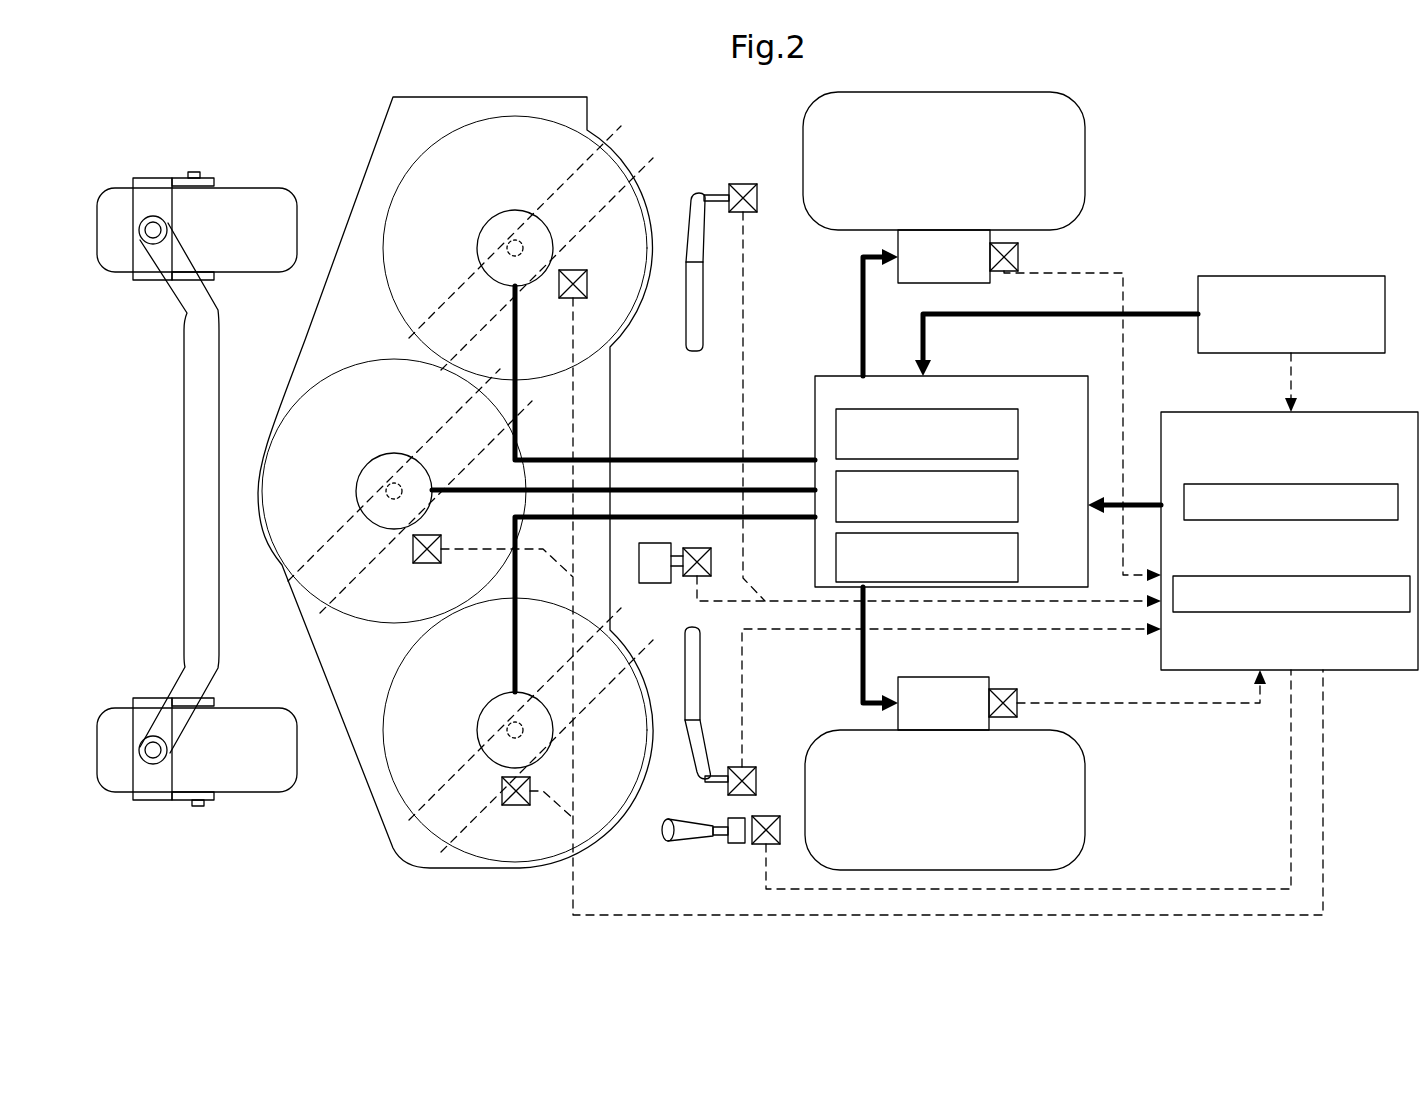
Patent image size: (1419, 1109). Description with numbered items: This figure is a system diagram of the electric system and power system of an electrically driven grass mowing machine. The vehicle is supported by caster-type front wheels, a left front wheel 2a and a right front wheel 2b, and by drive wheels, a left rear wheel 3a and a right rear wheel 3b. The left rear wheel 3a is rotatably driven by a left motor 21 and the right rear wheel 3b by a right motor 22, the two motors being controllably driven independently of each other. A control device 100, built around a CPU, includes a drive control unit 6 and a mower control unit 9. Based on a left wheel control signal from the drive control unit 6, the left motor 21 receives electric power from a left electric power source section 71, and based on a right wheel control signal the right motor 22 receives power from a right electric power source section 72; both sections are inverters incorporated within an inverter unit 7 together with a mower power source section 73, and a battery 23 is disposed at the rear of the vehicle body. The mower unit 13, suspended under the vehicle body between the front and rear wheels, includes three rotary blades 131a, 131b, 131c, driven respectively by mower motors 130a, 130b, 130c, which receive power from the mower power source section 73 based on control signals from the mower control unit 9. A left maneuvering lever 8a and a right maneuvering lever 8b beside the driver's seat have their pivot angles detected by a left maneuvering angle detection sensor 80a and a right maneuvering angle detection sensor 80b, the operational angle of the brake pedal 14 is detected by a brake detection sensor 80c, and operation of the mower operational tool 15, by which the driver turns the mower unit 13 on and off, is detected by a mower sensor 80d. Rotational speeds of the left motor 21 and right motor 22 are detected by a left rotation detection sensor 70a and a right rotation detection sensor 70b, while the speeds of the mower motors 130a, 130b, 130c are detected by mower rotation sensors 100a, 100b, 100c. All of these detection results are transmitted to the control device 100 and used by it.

The left front wheel 2a is at (235, 780).
The right front wheel 2b is at (232, 195).
The left rear wheel 3a is at (1075, 830).
The right rear wheel 3b is at (1072, 140).
The drive control unit 6 is at (1340, 521).
The inverter unit 7 is at (951, 459).
The left maneuvering lever 8a is at (701, 668).
The right maneuvering lever 8b is at (702, 318).
The mower control unit 9 is at (1291, 616).
The mower unit 13 is at (358, 176).
The brake pedal 14 is at (655, 584).
The mower operational tool 15 is at (665, 832).
The left motor 21 is at (945, 716).
The right motor 22 is at (948, 228).
The battery 23 is at (1291, 275).
The left rotation detection sensor 70a is at (1017, 693).
The right rotation detection sensor 70b is at (1008, 272).
The left electric power source section 71 is at (1020, 437).
The right electric power source section 72 is at (1020, 495).
The mower power source section 73 is at (1020, 555).
The left maneuvering angle detection sensor 80a is at (757, 781).
The right maneuvering angle detection sensor 80b is at (743, 183).
The brake detection sensor 80c is at (711, 562).
The mower sensor 80d is at (740, 846).
The control device 100 is at (1289, 583).
The mower rotation sensor 100a is at (517, 806).
The mower rotation sensor 100b is at (415, 566).
The mower rotation sensor 100c is at (590, 278).
The mower motor 130a is at (491, 703).
The mower motor 130b is at (395, 454).
The mower motor 130c is at (509, 211).
The rotary blade 131a is at (460, 822).
The rotary blade 131b is at (302, 590).
The rotary blade 131c is at (447, 295).